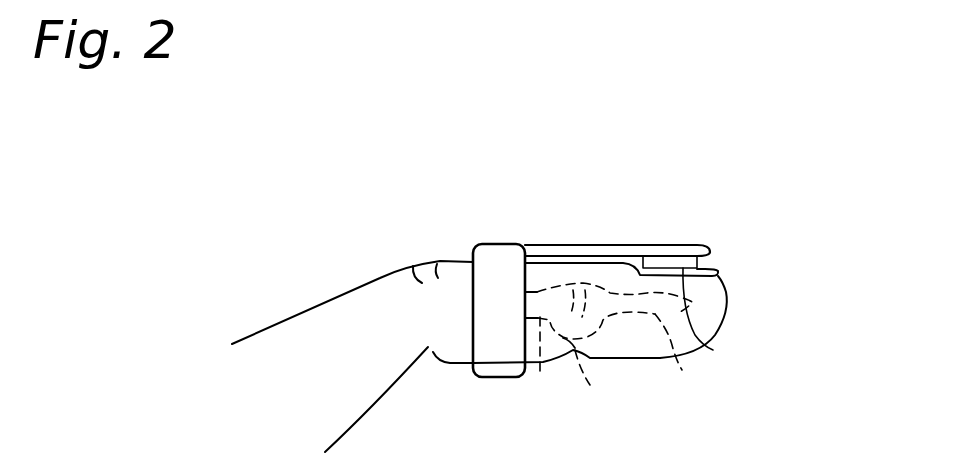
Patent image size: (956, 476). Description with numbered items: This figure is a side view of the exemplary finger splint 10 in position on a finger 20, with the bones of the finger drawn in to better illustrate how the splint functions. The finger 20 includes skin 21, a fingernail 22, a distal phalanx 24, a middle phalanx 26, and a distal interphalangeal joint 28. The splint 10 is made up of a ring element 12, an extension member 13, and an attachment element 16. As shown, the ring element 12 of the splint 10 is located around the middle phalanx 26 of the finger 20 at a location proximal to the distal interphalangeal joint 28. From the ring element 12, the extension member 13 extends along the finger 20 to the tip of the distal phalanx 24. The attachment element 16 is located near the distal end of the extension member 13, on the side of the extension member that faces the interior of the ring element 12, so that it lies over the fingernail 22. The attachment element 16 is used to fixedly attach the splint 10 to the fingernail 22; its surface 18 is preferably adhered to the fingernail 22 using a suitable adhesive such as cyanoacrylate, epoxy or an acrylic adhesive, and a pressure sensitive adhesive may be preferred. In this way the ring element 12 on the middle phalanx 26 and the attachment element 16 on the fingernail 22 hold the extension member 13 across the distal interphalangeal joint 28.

The finger splint 10 is at (605, 237).
The ring element 12 is at (493, 267).
The extension member 13 is at (587, 243).
The attachment element 16 is at (713, 260).
The surface 18 is at (713, 350).
The finger 20 is at (317, 305).
The skin 21 is at (455, 262).
The fingernail 22 is at (723, 292).
The distal phalanx 24 is at (682, 370).
The middle phalanx 26 is at (540, 372).
The distal interphalangeal joint 28 is at (590, 385).